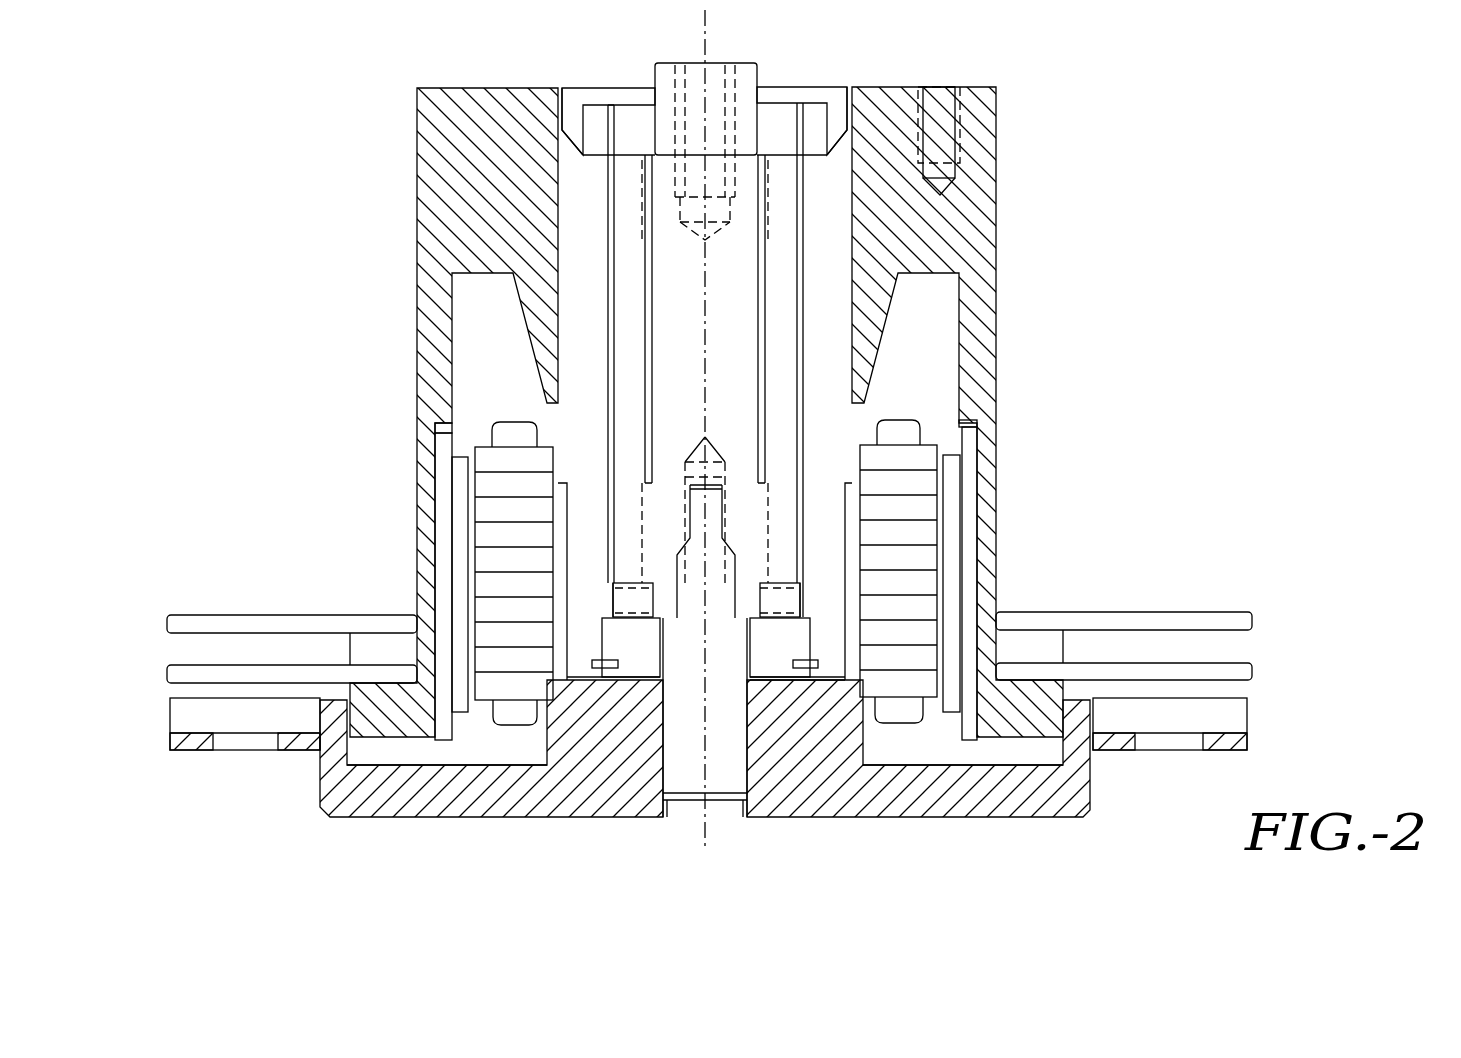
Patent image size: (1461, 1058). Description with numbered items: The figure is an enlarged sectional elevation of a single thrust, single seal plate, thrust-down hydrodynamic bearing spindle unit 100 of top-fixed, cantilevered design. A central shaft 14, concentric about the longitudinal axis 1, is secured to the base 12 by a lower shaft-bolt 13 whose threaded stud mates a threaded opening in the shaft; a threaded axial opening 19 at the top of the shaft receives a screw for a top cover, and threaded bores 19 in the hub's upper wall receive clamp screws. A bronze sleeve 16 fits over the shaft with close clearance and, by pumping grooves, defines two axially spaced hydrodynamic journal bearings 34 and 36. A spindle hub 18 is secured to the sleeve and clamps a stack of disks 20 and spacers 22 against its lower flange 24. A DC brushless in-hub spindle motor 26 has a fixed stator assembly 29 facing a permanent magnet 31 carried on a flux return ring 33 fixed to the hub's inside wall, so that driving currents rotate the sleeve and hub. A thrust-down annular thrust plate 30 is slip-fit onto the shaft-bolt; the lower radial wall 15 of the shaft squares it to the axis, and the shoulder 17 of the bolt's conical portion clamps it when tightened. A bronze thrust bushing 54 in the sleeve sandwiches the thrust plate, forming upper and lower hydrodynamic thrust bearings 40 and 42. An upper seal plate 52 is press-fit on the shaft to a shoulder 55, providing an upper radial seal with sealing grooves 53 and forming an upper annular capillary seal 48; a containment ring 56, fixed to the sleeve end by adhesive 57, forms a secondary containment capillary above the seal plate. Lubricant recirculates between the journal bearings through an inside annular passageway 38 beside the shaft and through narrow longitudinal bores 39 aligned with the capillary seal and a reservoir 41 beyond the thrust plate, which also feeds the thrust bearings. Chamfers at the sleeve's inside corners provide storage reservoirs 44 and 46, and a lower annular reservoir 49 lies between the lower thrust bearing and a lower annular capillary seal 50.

The HDB spindle unit 100 is at (322, 433).
The longitudinal axis 1 is at (699, 31).
The base 12 is at (875, 809).
The lower shaft-bolt 13 is at (733, 789).
The central shaft 14 is at (753, 68).
The lower radial wall 15 is at (663, 587).
The bronze sleeve 16 is at (619, 250).
The shoulder 17 is at (686, 621).
The spindle hub 18 is at (997, 214).
The threaded opening / threaded bores 19 is at (722, 100).
The disks 20 is at (1137, 612).
The spacers 22 is at (1052, 652).
The lower flange 24 is at (1043, 735).
The in-hub spindle motor 26 is at (912, 742).
The stator assembly 29 is at (895, 432).
The thrust plate 30 is at (612, 603).
The permanent magnet 31 is at (950, 458).
The flux return ring 33 is at (968, 425).
The upper hydrodynamic journal bearing 34 is at (630, 215).
The lower hydrodynamic journal bearing 36 is at (635, 502).
The inside annular passageway 38 is at (646, 357).
The longitudinal bores 39 is at (611, 287).
The upper hydrodynamic axial thrust bearing 40 is at (628, 583).
The reservoir 41 is at (801, 590).
The lower hydrodynamic axial thrust bearing 42 is at (633, 621).
The upper storage reservoir 44 is at (648, 157).
The lower storage reservoir 46 is at (765, 583).
The upper annular capillary seal 48 is at (801, 103).
The lower annular reservoir 49 is at (757, 621).
The lower annular capillary seal 50 is at (753, 680).
The upper seal plate 52 is at (782, 113).
The sealing grooves 53 is at (783, 151).
The thrust bushing 54 is at (810, 632).
The shoulder 55 is at (748, 166).
The containment ring 56 is at (580, 100).
The adhesive 57 is at (566, 150).